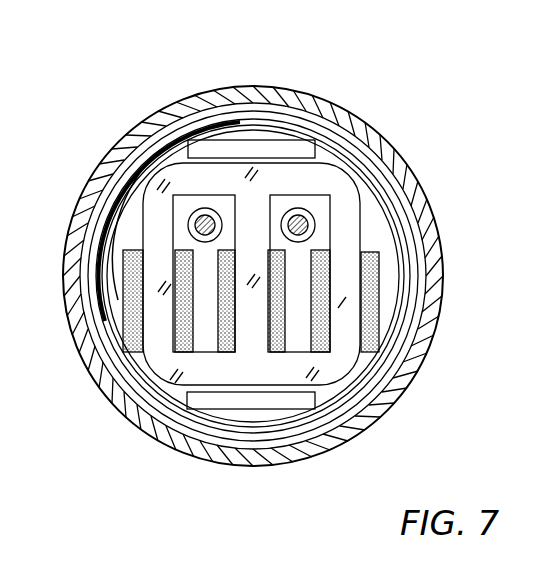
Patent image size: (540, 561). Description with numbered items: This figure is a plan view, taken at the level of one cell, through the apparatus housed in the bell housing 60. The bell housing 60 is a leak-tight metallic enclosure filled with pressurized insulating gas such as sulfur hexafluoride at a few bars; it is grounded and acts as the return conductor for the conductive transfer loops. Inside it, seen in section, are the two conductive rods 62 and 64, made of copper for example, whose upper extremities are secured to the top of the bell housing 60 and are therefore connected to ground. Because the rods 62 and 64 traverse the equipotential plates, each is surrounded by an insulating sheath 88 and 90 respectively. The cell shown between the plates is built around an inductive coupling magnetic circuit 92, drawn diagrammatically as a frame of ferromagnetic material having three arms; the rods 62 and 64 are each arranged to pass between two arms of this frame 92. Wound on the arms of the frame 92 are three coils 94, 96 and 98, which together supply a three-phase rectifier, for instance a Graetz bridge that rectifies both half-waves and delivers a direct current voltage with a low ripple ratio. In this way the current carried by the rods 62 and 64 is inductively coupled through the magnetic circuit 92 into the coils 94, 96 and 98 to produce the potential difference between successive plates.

The bell housing 60 is at (220, 92).
The conductive rod 62 is at (208, 220).
The conductive rod 64 is at (300, 222).
The insulating sheath 88 is at (188, 221).
The insulating sheath 90 is at (315, 225).
The inductive coupling magnetic circuit 92 is at (172, 366).
The coil 94 is at (133, 305).
The coil 96 is at (222, 298).
The coil 98 is at (360, 314).